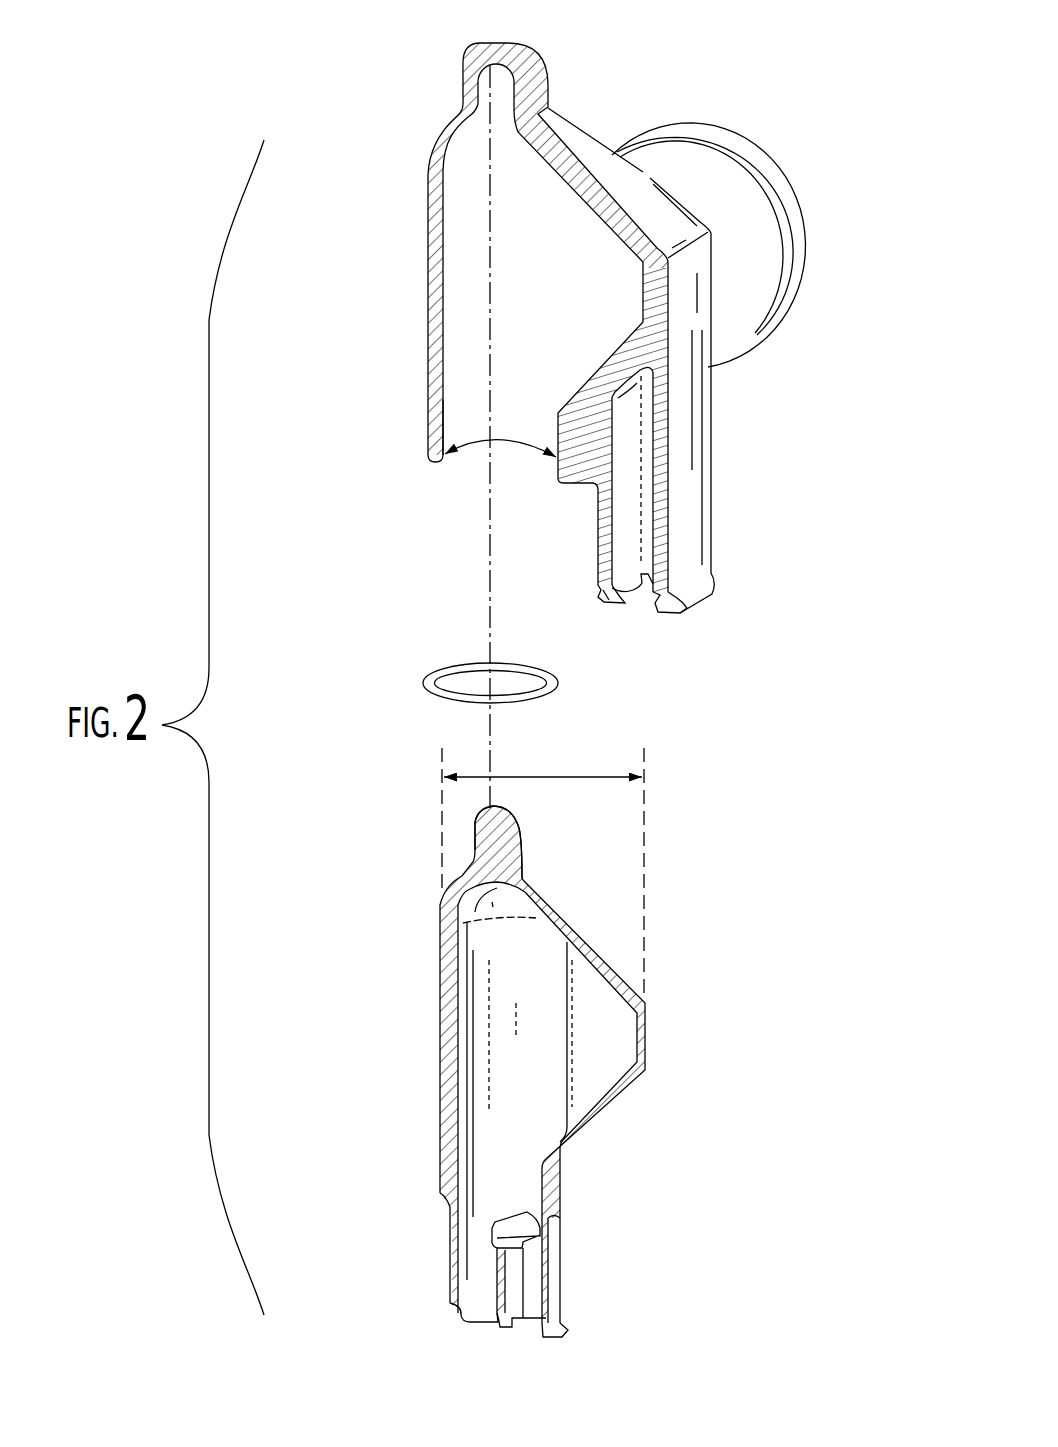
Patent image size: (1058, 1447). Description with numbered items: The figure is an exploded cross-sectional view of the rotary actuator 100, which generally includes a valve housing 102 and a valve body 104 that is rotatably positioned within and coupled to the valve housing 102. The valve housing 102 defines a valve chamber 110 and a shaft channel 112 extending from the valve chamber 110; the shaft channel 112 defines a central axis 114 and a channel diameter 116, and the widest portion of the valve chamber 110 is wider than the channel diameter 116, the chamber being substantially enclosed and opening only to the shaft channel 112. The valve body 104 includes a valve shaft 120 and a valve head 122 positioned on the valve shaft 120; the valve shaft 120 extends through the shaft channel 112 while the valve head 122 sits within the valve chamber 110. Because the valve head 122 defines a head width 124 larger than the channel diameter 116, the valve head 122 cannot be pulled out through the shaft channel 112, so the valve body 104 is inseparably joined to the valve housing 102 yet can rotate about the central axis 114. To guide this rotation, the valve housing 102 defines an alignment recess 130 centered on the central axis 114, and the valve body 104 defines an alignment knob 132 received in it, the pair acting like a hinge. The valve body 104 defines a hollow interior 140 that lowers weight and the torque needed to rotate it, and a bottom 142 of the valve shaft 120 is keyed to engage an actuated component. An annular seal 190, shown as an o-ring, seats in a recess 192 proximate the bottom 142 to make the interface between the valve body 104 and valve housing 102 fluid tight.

The rotary actuator 100 is at (398, 54).
The valve housing 102 is at (806, 357).
The valve body 104 is at (550, 1045).
The valve chamber 110 is at (513, 261).
The shaft channel 112 is at (477, 430).
The central axis 114 is at (488, 532).
The channel diameter 116 is at (473, 455).
The valve shaft 120 is at (558, 1200).
The valve head 122 is at (632, 993).
The head width 124 is at (613, 777).
The alignment recess 130 is at (506, 84).
The alignment knob 132 is at (488, 842).
The hollow interior 140 is at (549, 1084).
The bottom 142 is at (486, 1326).
The annular seal 190 is at (558, 683).
The recess 192 is at (442, 1210).